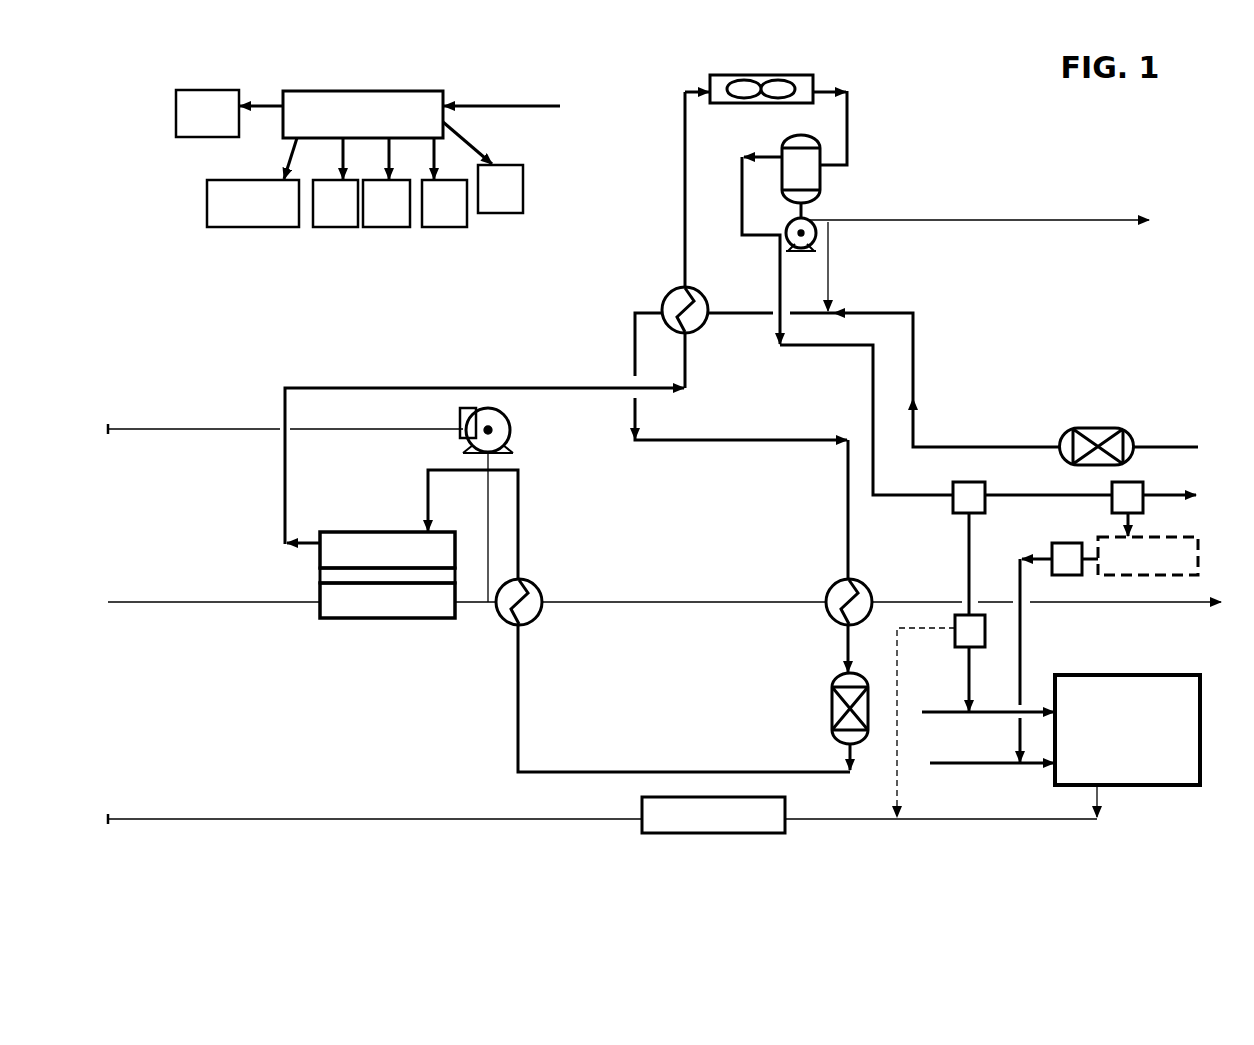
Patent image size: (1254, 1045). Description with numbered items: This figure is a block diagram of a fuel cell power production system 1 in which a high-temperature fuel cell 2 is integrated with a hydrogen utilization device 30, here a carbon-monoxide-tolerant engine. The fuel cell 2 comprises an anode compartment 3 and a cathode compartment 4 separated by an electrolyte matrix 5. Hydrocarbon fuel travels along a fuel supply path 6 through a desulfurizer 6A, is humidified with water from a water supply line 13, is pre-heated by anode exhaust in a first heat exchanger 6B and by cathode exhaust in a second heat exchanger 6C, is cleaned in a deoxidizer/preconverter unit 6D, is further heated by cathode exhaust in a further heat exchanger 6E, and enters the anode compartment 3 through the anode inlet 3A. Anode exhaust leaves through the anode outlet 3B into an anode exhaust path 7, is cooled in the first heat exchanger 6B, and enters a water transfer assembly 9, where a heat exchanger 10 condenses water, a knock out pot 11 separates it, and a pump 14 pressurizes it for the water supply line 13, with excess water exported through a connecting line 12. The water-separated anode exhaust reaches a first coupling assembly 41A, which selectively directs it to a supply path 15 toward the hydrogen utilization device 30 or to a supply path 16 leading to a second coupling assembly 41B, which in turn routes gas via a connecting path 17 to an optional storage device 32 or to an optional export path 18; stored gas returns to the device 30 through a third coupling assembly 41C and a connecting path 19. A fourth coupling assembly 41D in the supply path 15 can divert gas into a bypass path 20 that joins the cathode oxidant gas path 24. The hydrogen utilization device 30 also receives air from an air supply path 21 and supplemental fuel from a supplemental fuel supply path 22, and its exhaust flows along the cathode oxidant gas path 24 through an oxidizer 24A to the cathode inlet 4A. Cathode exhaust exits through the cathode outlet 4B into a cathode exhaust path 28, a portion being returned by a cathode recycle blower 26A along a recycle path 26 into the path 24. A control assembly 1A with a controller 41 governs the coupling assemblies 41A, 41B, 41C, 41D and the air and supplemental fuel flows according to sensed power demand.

The fuel cell power production system 1 is at (640, 107).
The control assembly 1A is at (333, 76).
The high-temperature fuel cell 2 is at (300, 574).
The anode compartment 3 is at (380, 531).
The anode inlet 3A is at (433, 530).
The anode outlet 3B is at (318, 536).
The cathode compartment 4 is at (372, 616).
The cathode inlet 4A is at (318, 614).
The cathode outlet 4B is at (457, 614).
The electrolyte matrix 5 is at (443, 577).
The fuel supply path 6 is at (965, 447).
The desulfurizer 6A is at (1093, 428).
The first heat exchanger 6B is at (668, 302).
The second heat exchanger 6C is at (867, 588).
The deoxidizer/preconverter unit 6D is at (830, 707).
The further heat exchanger 6E is at (540, 588).
The anode exhaust path 7 is at (283, 471).
The water transfer assembly 9 is at (854, 72).
The heat exchanger 10 is at (770, 75).
The knock out pot 11 is at (787, 138).
The connecting line 12 is at (877, 220).
The water supply line 13 is at (829, 273).
The pump 14 is at (812, 221).
The supply path 15 is at (975, 554).
The supply path 16 is at (1058, 495).
The connecting path 17 is at (1123, 530).
The export path 18 is at (1180, 495).
The connecting path 19 is at (1025, 655).
The bypass path 20 is at (898, 660).
The air supply path 21 is at (960, 710).
The supplemental fuel supply path 22 is at (950, 765).
The cathode oxidant gas path 24 is at (178, 603).
The oxidizer 24A is at (785, 810).
The recycle path 26 is at (108, 525).
The cathode recycle blower 26A is at (498, 427).
The cathode exhaust path 28 is at (673, 602).
The hydrogen utilization device 30 is at (1153, 683).
The storage device 32 is at (1185, 560).
The controller 41 is at (380, 91).
The first coupling assembly 41A is at (968, 490).
The second coupling assembly 41B is at (1128, 485).
The third coupling assembly 41C is at (1062, 577).
The fourth coupling assembly 41D is at (975, 628).